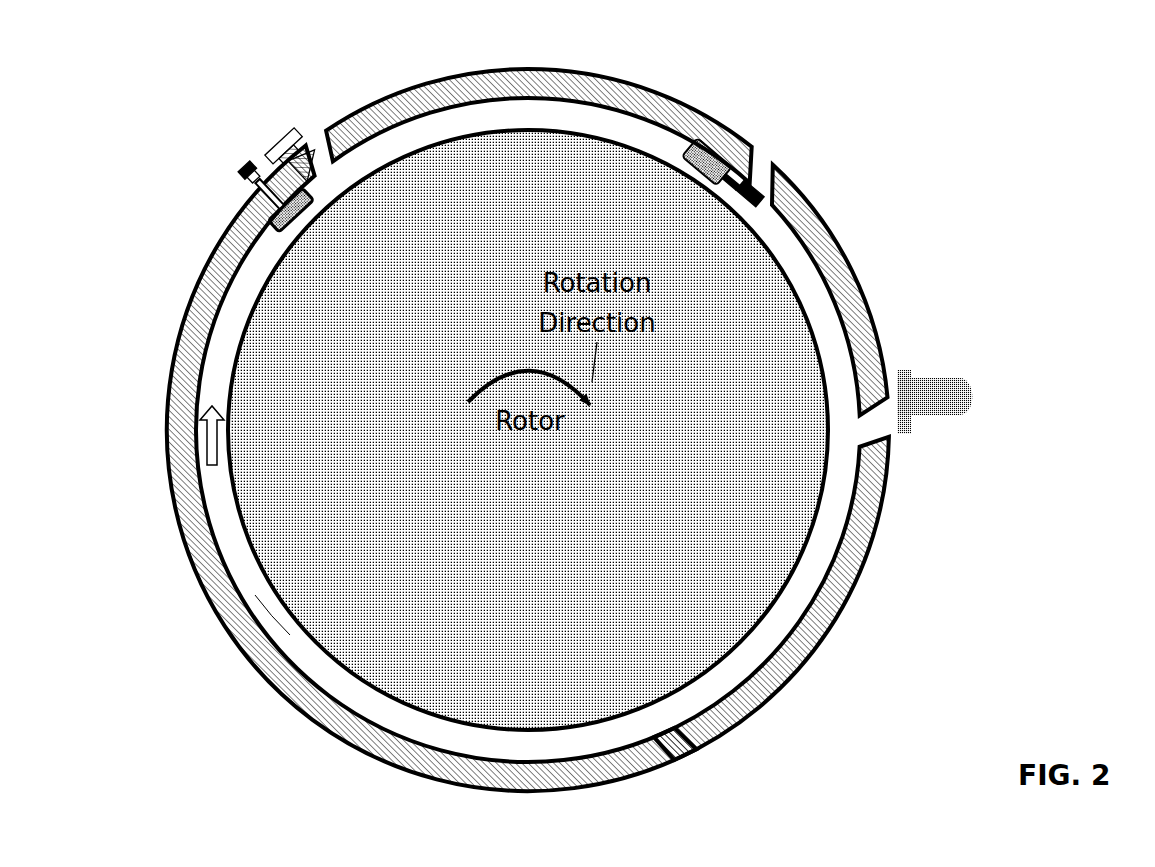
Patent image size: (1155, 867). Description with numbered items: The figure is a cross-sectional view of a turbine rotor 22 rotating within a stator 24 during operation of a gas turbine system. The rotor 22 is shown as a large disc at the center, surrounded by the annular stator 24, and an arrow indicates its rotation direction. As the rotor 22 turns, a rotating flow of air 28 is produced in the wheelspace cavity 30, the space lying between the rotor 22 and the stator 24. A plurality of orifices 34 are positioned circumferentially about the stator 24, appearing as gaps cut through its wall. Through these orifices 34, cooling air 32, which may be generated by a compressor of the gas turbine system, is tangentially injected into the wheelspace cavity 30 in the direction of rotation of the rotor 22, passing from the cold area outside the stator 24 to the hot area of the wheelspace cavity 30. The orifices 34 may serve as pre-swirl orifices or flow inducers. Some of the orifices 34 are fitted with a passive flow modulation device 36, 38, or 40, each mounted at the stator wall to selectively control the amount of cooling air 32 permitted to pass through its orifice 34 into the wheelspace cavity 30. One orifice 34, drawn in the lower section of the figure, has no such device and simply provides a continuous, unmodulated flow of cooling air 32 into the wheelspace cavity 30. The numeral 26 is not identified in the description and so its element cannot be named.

The turbine rotor 22 is at (784, 599).
The stator 24 is at (882, 556).
The outer surface of casing 26 is at (190, 566).
The rotating flow of air 28 is at (207, 440).
The wheelspace cavity 30 is at (276, 619).
The cooling air 32 is at (238, 187).
The orifices 34 is at (328, 148).
The passive flow modulation device 36 is at (258, 170).
The passive flow modulation device 38 is at (718, 152).
The passive flow modulation device 40 is at (938, 420).